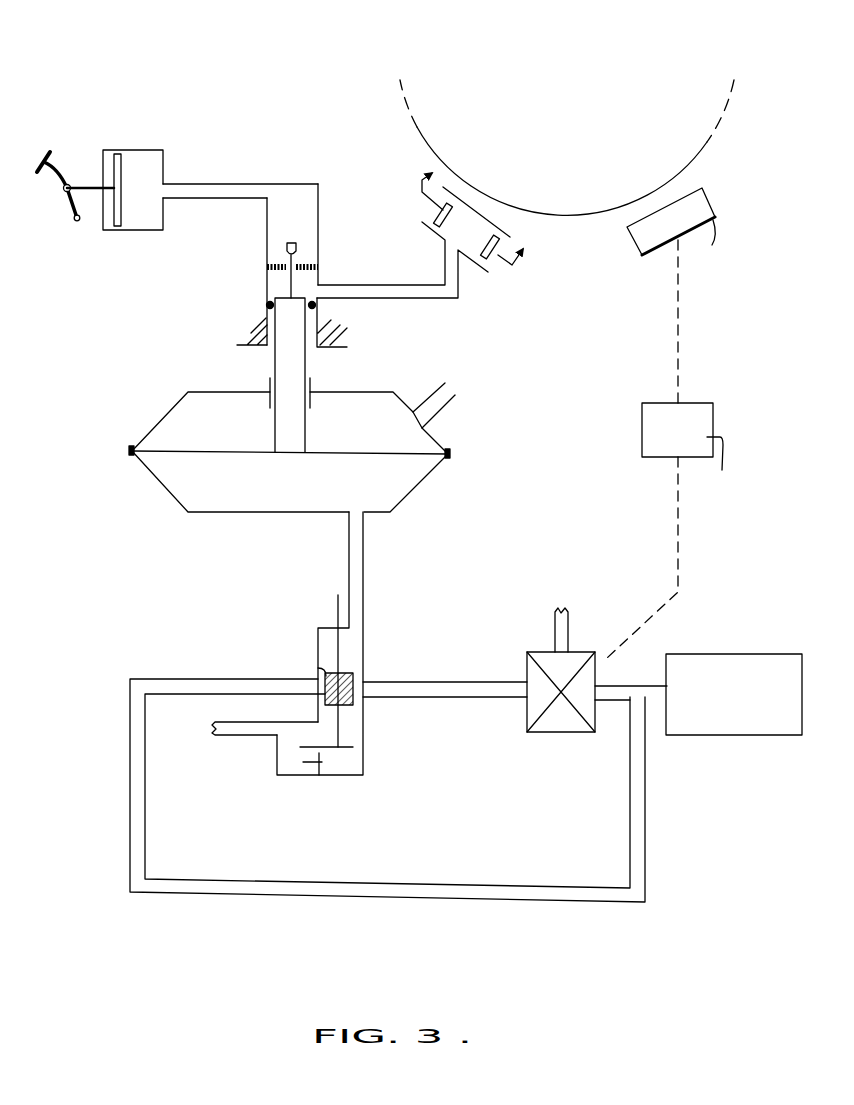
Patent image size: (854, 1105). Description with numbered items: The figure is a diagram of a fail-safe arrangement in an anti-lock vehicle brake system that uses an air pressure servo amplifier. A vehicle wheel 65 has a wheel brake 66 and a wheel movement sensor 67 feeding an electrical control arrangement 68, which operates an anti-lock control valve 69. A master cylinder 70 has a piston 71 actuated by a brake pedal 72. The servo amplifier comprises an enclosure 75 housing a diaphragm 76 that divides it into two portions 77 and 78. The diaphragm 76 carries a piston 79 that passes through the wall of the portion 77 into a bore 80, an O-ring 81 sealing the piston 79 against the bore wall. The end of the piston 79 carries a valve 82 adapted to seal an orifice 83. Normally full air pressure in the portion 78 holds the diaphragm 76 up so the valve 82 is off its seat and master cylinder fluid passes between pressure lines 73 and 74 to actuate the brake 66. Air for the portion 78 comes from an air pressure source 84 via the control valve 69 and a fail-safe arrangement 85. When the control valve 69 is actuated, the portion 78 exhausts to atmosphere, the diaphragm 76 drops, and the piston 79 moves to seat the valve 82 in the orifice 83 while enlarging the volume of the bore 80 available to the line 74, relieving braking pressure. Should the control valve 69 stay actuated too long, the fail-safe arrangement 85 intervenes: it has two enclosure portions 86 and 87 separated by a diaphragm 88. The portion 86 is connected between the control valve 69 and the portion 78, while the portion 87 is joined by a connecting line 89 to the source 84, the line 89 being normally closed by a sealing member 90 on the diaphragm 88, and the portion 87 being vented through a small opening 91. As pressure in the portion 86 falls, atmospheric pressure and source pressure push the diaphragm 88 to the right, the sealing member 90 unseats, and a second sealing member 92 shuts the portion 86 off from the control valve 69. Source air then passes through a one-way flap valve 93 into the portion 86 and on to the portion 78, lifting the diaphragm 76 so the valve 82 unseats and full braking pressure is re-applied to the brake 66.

The vehicle wheel 65 is at (580, 217).
The wheel brake 66 is at (482, 253).
The wheel movement sensor 67 is at (650, 237).
The electrical control arrangement 68 is at (683, 402).
The anti-lock control valve 69 is at (525, 665).
The master cylinder 70 is at (143, 165).
The piston 71 is at (115, 228).
The brake pedal 72 is at (70, 210).
The pressure line 73 is at (217, 183).
The pressure line 74 is at (380, 295).
The enclosure 75 is at (265, 512).
The diaphragm 76 is at (342, 455).
The enclosure portion 77 is at (233, 438).
The enclosure portion 78 is at (237, 495).
The piston 79 is at (290, 428).
The bore 80 is at (277, 285).
The O-ring 81 is at (318, 312).
The valve 82 is at (298, 243).
The orifice 83 is at (295, 270).
The air pressure source 84 is at (758, 653).
The fail-safe arrangement 85 is at (363, 753).
The enclosure portion 86 is at (350, 723).
The enclosure portion 87 is at (313, 728).
The diaphragm 88 is at (338, 650).
The connecting line 89 is at (380, 882).
The sealing member 90 is at (320, 672).
The small opening 91 is at (242, 732).
The sealing member 92 is at (353, 680).
The one-way flap valve 93 is at (322, 777).